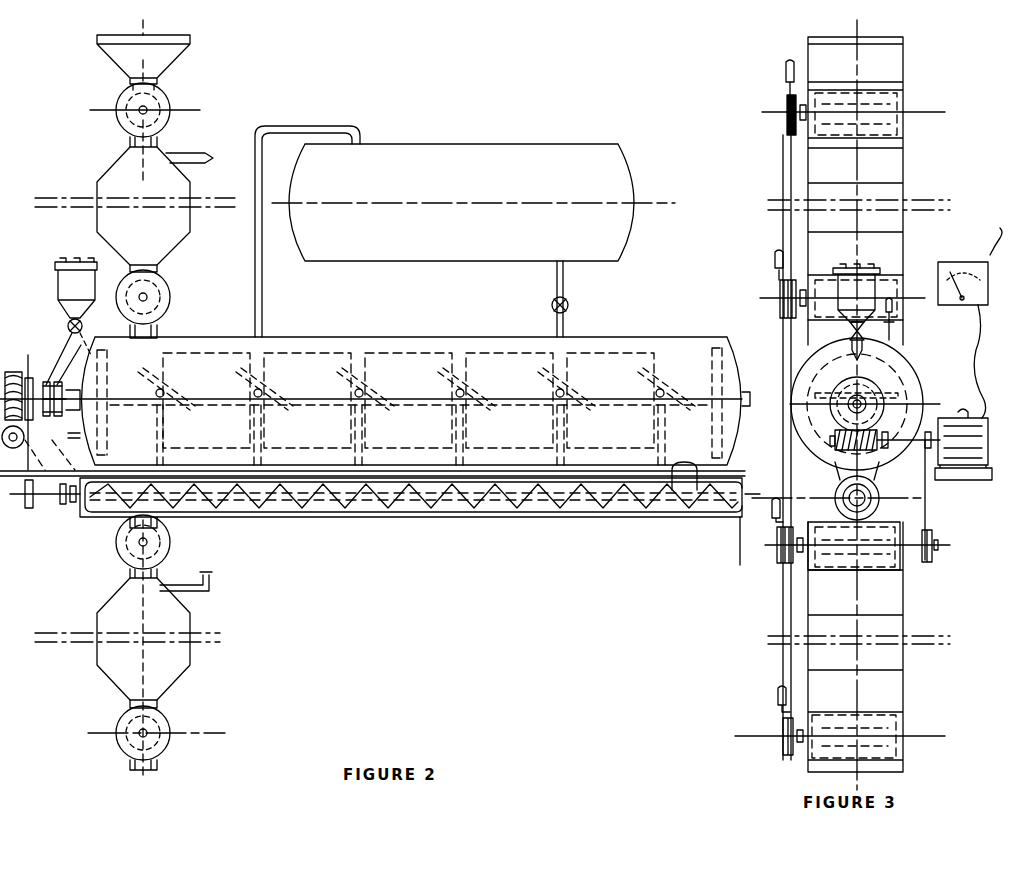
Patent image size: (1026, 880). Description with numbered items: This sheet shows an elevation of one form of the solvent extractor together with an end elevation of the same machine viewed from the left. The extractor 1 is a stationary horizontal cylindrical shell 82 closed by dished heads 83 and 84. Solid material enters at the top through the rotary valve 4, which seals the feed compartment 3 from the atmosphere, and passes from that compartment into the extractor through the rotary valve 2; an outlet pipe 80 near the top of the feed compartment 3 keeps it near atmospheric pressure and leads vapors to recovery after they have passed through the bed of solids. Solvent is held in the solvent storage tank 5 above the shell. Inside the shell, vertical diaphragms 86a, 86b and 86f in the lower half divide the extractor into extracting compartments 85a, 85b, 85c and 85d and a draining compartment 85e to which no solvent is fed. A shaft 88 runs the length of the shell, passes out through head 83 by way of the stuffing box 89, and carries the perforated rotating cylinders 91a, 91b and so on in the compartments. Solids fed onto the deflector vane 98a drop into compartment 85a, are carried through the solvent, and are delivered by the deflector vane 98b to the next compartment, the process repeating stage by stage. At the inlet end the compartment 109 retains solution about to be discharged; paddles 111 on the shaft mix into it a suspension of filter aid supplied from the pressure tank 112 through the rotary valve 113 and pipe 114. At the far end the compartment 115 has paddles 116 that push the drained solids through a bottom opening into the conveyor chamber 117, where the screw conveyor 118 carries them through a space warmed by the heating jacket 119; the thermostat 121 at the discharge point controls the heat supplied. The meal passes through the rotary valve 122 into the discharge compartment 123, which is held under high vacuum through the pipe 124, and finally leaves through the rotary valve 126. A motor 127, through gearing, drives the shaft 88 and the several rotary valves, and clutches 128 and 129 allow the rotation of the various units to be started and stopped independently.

In FIG. 2, the extractor 1 is at (373, 337).
In FIG. 3, the extractor 1 is at (912, 385).
In FIG. 2, the rotary valve 2 is at (170, 297).
In FIG. 3, the rotary valve 2 is at (903, 292).
In FIG. 2, the feed compartment 3 is at (190, 186).
In FIG. 3, the feed compartment 3 is at (903, 197).
In FIG. 2, the rotary valve 4 is at (162, 100).
In FIG. 3, the rotary valve 4 is at (903, 108).
In FIG. 2, the solvent storage tank 5 is at (465, 231).
In FIG. 2, the outlet pipe 80 is at (187, 152).
In FIG. 2, the cylindrical shell 82 is at (490, 465).
In FIG. 2, the dished head 83 is at (82, 433).
In FIG. 2, the dished head 84 is at (742, 380).
In FIG. 2, the compartment 85a is at (206, 400).
In FIG. 2, the compartment 85b is at (307, 400).
In FIG. 2, the compartment 85c is at (408, 400).
In FIG. 2, the compartment 85d is at (509, 400).
In FIG. 2, the compartment 85e is at (610, 400).
In FIG. 2, the diaphragm 86a is at (163, 458).
In FIG. 2, the diaphragm 86b is at (261, 458).
In FIG. 2, the diaphragm 86f is at (652, 458).
In FIG. 3, the shaft 88 is at (848, 402).
In FIG. 2, the stuffing box 89 is at (64, 359).
In FIG. 2, the rotating cylinder 91a is at (245, 370).
In FIG. 2, the rotating cylinder 91b is at (335, 370).
In FIG. 2, the deflector vane 98a is at (170, 395).
In FIG. 2, the deflector vane 98b is at (268, 393).
In FIG. 2, the compartment 109 is at (123, 402).
In FIG. 2, the paddles 111 is at (108, 380).
In FIG. 2, the pressure tank 112 is at (76, 288).
In FIG. 3, the pressure tank 112 is at (863, 302).
In FIG. 2, the rotary valve 113 is at (68, 322).
In FIG. 3, the rotary valve 113 is at (847, 330).
In FIG. 2, the pipe 114 is at (102, 333).
In FIG. 2, the compartment 115 is at (692, 445).
In FIG. 2, the paddles 116 is at (708, 410).
In FIG. 2, the conveyor chamber 117 is at (663, 490).
In FIG. 3, the conveyor chamber 117 is at (838, 498).
In FIG. 2, the screw conveyor 118 is at (570, 508).
In FIG. 2, the heating jacket 119 is at (447, 508).
In FIG. 2, the thermostat 121 is at (148, 512).
In FIG. 2, the rotary valve 122 is at (158, 542).
In FIG. 3, the rotary valve 122 is at (903, 570).
In FIG. 2, the discharge compartment 123 is at (190, 613).
In FIG. 2, the pipe 124 is at (209, 582).
In FIG. 2, the rotary valve 126 is at (170, 733).
In FIG. 3, the rotary valve 126 is at (905, 728).
In FIG. 3, the motor 127 is at (975, 470).
In FIG. 3, the clutch 128 is at (783, 72).
In FIG. 3, the clutch 129 is at (773, 258).